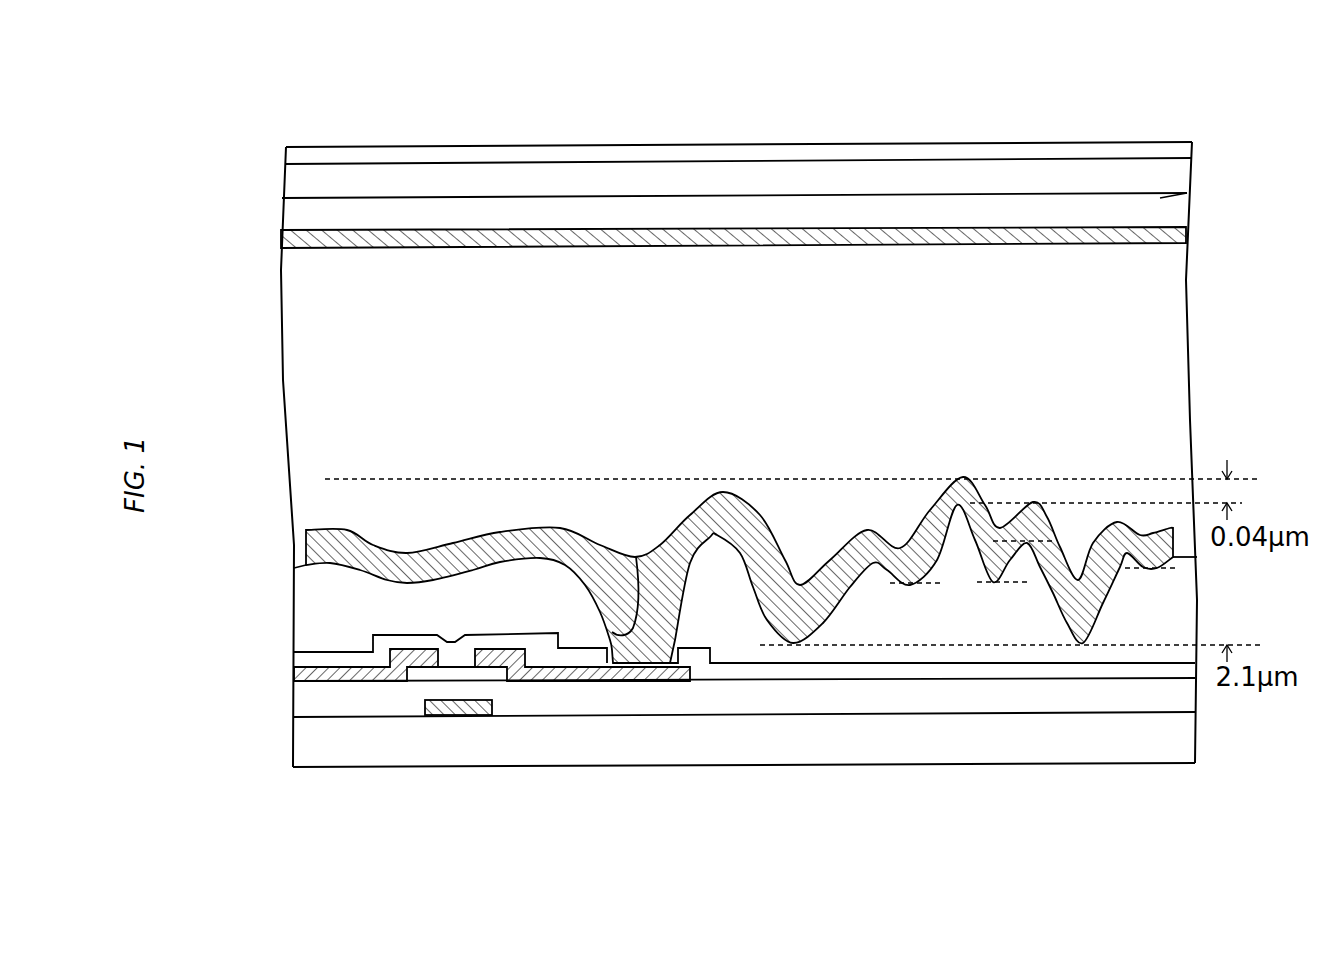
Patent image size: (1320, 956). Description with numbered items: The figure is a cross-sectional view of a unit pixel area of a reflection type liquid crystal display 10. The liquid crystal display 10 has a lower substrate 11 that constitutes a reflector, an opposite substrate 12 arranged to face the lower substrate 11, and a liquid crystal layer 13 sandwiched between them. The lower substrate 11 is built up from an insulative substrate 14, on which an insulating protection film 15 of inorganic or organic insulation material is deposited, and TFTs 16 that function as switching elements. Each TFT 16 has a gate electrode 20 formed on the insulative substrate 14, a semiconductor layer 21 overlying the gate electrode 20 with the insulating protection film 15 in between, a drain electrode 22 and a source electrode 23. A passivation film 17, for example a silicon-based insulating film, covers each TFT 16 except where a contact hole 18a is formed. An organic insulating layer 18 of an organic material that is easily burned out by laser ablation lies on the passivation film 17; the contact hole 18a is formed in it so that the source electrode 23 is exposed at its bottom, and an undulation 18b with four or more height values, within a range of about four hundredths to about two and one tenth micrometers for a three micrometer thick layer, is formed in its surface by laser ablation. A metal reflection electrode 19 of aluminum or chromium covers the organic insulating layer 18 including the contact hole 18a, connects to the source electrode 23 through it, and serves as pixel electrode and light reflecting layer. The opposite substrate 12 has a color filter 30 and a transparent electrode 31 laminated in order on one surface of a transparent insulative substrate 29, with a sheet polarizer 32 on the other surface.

The liquid crystal display 10 is at (486, 100).
The lower substrate 11 is at (707, 652).
The opposite substrate 12 is at (797, 168).
The liquid crystal layer 13 is at (375, 393).
The insulative substrate 14 is at (983, 728).
The insulating protection film 15 is at (1133, 690).
The TFT 16 is at (492, 768).
The passivation film 17 is at (593, 657).
The organic insulating layer 18 is at (745, 618).
The contact hole 18a is at (635, 628).
The undulation 18b is at (957, 548).
The reflection electrode 19 is at (672, 550).
The gate electrode 20 is at (458, 758).
The semiconductor layer 21 is at (435, 677).
The drain electrode 22 is at (331, 685).
The source electrode 23 is at (532, 681).
The insulative substrate 29 is at (1160, 172).
The color filter 30 is at (1160, 204).
The transparent electrode 31 is at (765, 235).
The sheet polarizer 32 is at (1117, 147).